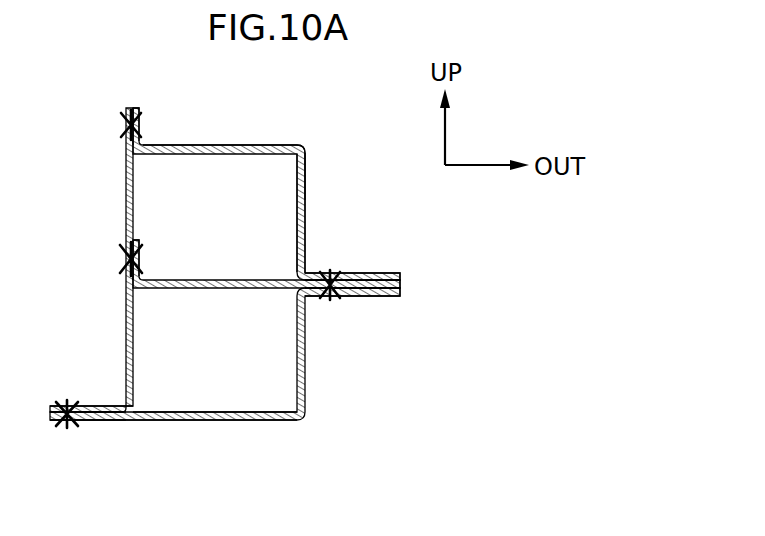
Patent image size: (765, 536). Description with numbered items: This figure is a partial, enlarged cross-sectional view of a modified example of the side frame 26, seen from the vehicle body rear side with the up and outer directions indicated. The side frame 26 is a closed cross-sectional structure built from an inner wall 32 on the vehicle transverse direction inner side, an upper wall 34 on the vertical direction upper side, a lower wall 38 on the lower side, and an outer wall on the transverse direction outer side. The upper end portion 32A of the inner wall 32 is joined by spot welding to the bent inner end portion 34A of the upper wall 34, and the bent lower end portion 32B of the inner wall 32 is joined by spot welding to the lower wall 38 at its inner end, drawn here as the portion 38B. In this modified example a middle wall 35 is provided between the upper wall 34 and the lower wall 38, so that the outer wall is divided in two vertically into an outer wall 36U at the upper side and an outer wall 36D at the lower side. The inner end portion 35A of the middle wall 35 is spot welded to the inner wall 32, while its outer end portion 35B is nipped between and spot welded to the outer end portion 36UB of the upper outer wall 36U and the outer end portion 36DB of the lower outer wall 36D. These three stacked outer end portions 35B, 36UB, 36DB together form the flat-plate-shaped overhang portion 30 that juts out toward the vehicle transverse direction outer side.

The side frame 26 is at (284, 131).
The overhang portion 30 is at (360, 268).
The inner wall 32 is at (125, 212).
The upper end portion of the inner wall 32A is at (126, 120).
The bent lower end portion of the inner wall 32B is at (93, 405).
The upper wall 34 is at (192, 145).
The bent inner end portion of the upper wall 34A is at (140, 119).
The middle wall 35 is at (192, 289).
The inner end portion of the middle wall 35A is at (136, 258).
The outer end portion of the middle wall 35B is at (400, 284).
The outer wall at the upper side 36U is at (306, 182).
The outer end portion of the upper-side outer wall 36UB is at (377, 273).
The outer wall at the lower side 36D is at (306, 372).
The outer end portion of the lower-side outer wall 36DB is at (374, 297).
The lower wall 38 is at (205, 421).
The flange of lower panel 38B is at (86, 422).